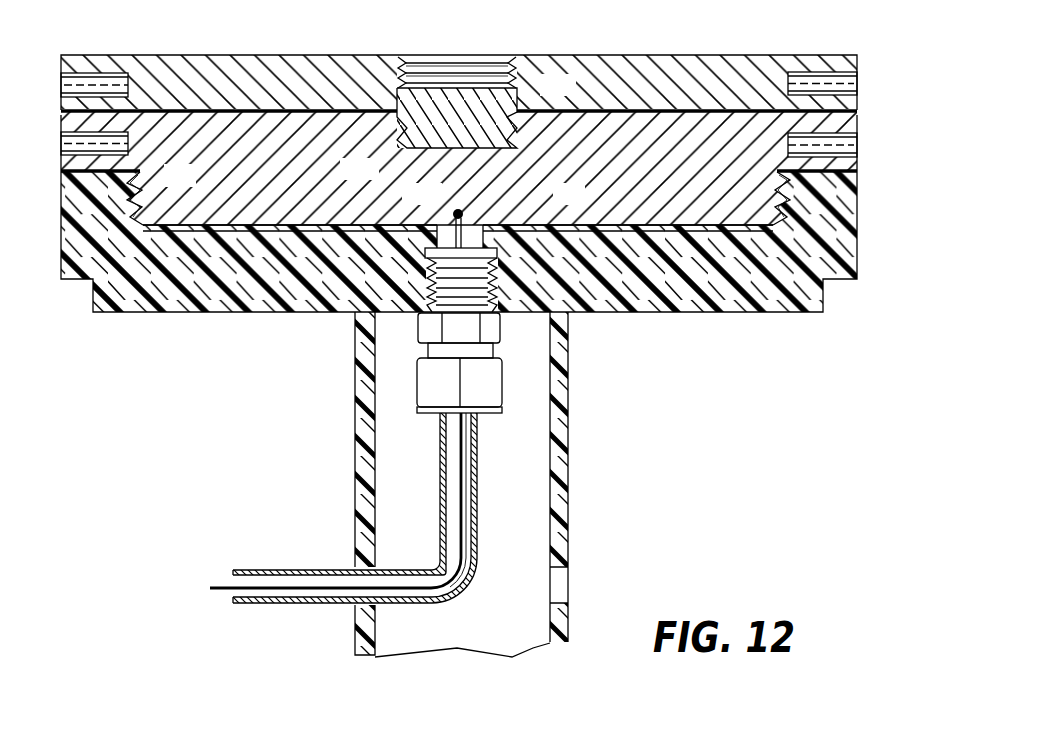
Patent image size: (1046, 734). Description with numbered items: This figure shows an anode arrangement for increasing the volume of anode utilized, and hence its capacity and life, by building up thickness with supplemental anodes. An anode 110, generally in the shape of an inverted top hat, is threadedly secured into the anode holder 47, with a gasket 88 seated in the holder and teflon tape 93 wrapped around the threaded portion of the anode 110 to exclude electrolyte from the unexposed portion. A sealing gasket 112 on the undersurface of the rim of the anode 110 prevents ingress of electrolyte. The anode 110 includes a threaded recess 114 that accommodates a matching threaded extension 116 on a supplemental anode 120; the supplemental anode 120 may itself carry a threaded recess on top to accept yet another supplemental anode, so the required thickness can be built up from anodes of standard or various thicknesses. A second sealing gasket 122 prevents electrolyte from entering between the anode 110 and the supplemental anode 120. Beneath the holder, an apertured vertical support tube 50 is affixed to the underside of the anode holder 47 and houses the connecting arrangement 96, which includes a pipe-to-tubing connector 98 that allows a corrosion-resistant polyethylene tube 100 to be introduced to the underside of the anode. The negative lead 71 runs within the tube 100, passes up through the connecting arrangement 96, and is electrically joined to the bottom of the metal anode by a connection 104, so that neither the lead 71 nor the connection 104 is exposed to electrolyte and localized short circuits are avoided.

The supplemental anode 120 is at (857, 63).
The second sealing gasket 122 is at (857, 111).
The anode 110 is at (857, 128).
The sealing gasket 112 is at (857, 172).
The anode holder 47 is at (857, 232).
The threaded recess 114 is at (422, 62).
The threaded extension 116 is at (465, 128).
The teflon tape 93 is at (145, 176).
The gasket 88 is at (586, 226).
The connection 104 is at (457, 209).
The connecting arrangement 96 is at (535, 362).
The vertical support tube 50 is at (568, 440).
The pipe-to-tubing connector 98 is at (432, 416).
The polyethylene tube 100 is at (405, 569).
The negative lead 71 is at (219, 586).